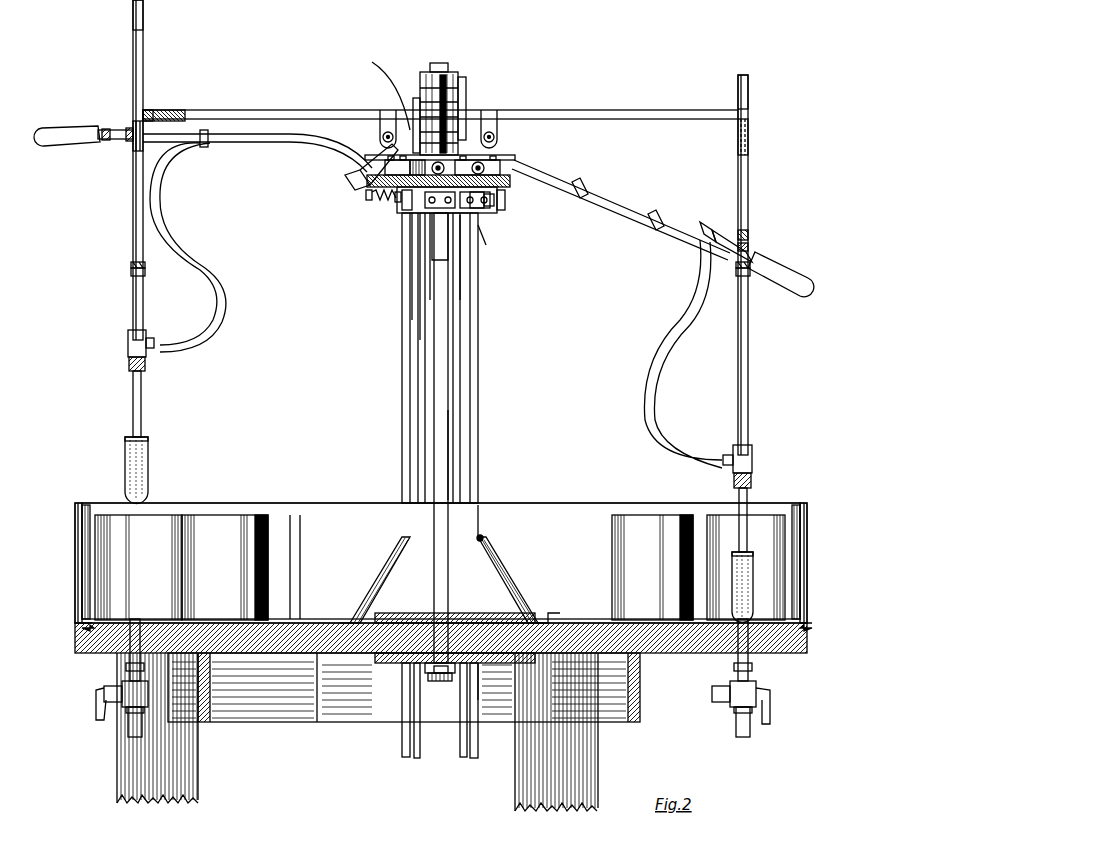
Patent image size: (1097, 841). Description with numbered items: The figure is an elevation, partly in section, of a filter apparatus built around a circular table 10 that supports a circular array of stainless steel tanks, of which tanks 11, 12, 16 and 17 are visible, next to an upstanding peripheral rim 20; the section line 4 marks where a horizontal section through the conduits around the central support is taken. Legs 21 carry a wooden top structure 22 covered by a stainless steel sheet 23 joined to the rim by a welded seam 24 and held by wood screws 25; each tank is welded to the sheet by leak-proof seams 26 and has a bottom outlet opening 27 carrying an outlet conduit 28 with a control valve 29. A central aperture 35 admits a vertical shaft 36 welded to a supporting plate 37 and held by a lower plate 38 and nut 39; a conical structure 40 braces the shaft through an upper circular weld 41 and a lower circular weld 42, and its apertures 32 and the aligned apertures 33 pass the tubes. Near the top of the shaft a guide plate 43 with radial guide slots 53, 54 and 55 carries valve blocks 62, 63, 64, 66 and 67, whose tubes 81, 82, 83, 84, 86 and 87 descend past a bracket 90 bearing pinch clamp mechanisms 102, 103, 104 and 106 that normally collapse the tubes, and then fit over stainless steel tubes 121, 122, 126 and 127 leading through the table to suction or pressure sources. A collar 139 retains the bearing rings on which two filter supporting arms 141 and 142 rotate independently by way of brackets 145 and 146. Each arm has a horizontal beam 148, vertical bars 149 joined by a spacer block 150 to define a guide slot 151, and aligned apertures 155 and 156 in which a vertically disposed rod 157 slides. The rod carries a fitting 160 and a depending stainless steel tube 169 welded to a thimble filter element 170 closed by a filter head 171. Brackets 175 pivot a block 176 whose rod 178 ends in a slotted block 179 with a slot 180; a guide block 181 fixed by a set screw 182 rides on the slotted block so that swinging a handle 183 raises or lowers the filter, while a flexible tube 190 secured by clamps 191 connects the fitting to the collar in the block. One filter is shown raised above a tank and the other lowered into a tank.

The section line 4— 4 is at (822, 472).
The circular table 10 is at (72, 652).
The tank 11 is at (612, 546).
The tank 12 is at (786, 548).
The tank 16 is at (165, 515).
The tank 17 is at (213, 515).
The peripheral rim 20 is at (74, 566).
The legs 21 is at (198, 800).
The wooden top structure 22 is at (318, 700).
The stainless steel sheet 23 is at (305, 600).
The welded seam 24 is at (86, 608).
The wood screws 25 is at (80, 628).
The leak-proof seams 26 is at (592, 640).
The outlet opening 27 is at (128, 670).
The outlet conduit 28 is at (122, 665).
The control valve 29 is at (98, 722).
The apertures 32 is at (484, 536).
The aligned apertures 33 is at (500, 615).
The central aperture 35 is at (432, 655).
The vertical shaft 36 is at (448, 410).
The supporting plate 37 is at (372, 600).
The lower plate 38 is at (480, 700).
The nut 39 is at (441, 700).
The conical structure 40 is at (500, 565).
The upper circular weld 41 is at (449, 475).
The lower circular weld 42 is at (548, 612).
The guide plate 43 is at (505, 188).
The guide slot 53 is at (511, 182).
The guide slot 54 is at (418, 250).
The guide slot 55 is at (400, 200).
The valve block 62 is at (490, 168).
The valve block 63 is at (470, 160).
The valve block 64 is at (410, 240).
The valve block 66 is at (372, 196).
The valve block 67 is at (375, 64).
The tube 81 is at (472, 355).
The tube 82 is at (466, 340).
The tube 83 is at (462, 250).
The tube 84 is at (445, 262).
The tube 86 is at (416, 330).
The tube 87 is at (422, 350).
The bracket 90 is at (480, 235).
The pinch clamp mechanism 102 is at (490, 205).
The pinch clamp mechanism 103 is at (480, 212).
The pinch clamp mechanism 104 is at (430, 240).
The pinch clamp mechanism 106 is at (405, 210).
The stainless steel tube 121 is at (463, 758).
The stainless steel tube 122 is at (474, 760).
The stainless steel tube 126 is at (405, 758).
The stainless steel tube 127 is at (417, 760).
The collar 139 is at (452, 76).
The filter supporting arm 141 is at (272, 100).
The filter supporting arm 142 is at (542, 100).
The mounting bracket 145 is at (414, 104).
The bracket 146 is at (466, 96).
The horizontal beam 148 is at (288, 116).
The vertical bars 149 is at (132, 194).
The spacer block 150 is at (130, 265).
The guide slot 151 is at (132, 214).
The aperture 155 is at (146, 108).
The aperture 156 is at (144, 272).
The vertically disposed rod 157 is at (144, 20).
The fitting 160 is at (126, 350).
The stainless steel tube 169 is at (142, 392).
The filter element 170 is at (149, 455).
The filter head 171 is at (146, 437).
The brackets 175 is at (388, 112).
The block 176 is at (356, 178).
The rod 178 is at (228, 134).
The slotted block 179 is at (108, 128).
The slot 180 is at (115, 140).
The guide block 181 is at (152, 112).
The set screw 182 is at (128, 126).
The handle 183 is at (52, 136).
The flexible tube 190 is at (160, 196).
The clamps 191 is at (208, 152).